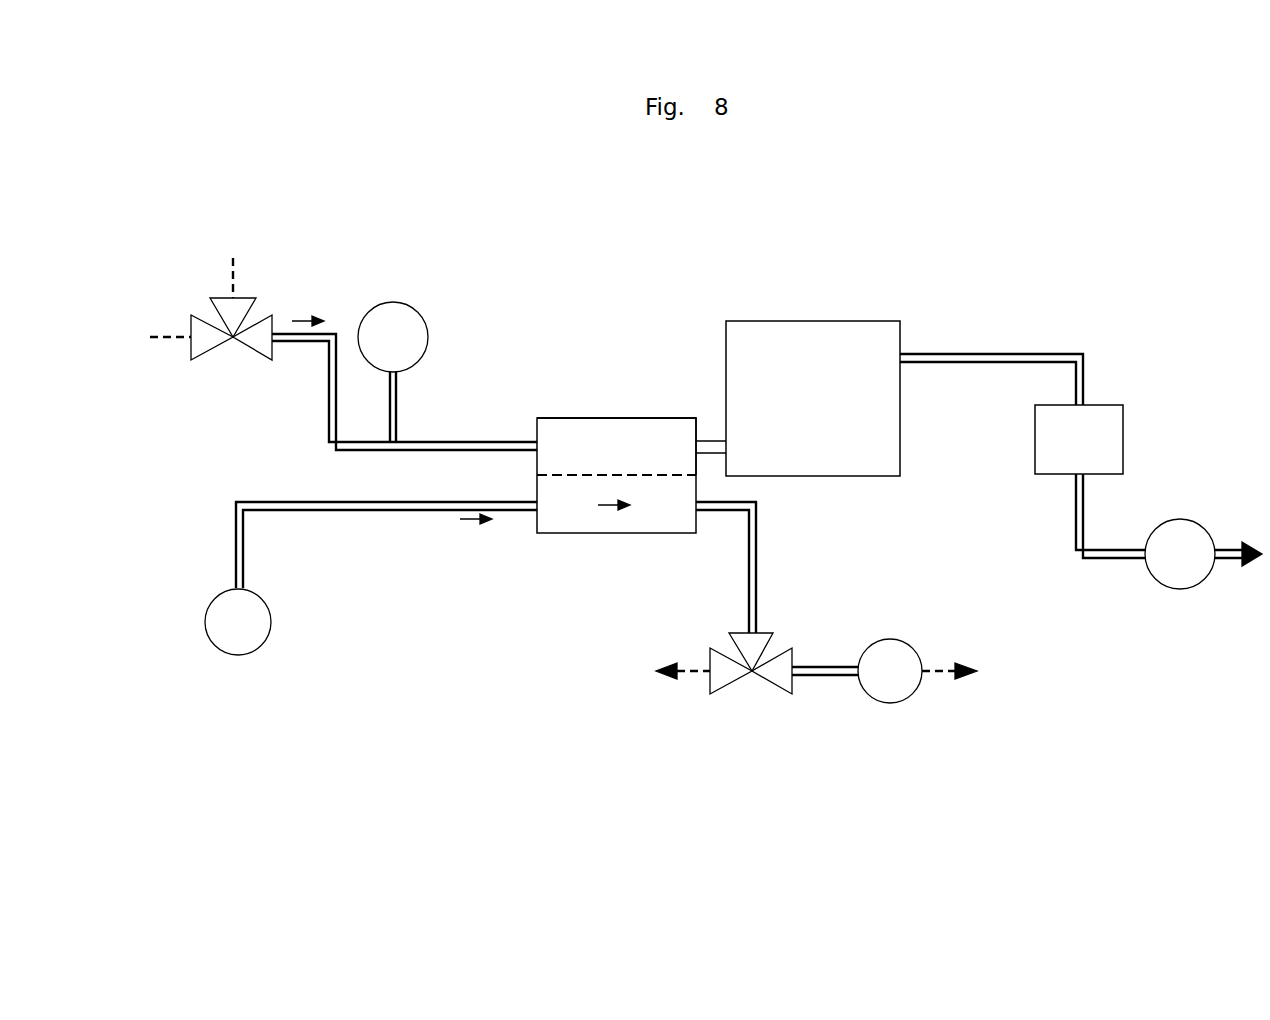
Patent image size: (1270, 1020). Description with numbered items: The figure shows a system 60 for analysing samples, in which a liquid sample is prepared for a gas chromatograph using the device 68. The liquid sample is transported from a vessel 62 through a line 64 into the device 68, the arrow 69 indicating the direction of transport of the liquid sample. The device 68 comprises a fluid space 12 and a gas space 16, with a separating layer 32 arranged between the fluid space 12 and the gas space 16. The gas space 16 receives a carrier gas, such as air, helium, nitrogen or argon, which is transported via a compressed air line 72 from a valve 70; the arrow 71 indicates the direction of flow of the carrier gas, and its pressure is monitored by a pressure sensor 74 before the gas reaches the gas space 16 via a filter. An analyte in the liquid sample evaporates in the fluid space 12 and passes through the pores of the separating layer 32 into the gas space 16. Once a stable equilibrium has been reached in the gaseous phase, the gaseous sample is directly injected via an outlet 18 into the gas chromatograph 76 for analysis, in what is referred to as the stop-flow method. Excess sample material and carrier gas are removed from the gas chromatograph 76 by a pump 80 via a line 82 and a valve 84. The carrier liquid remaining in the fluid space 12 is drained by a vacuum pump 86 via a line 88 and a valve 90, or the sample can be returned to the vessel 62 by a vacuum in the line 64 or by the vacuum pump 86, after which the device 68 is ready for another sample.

The system 60 is at (370, 173).
The valve 70 is at (258, 352).
The arrow 71 is at (300, 320).
The pressure sensor 74 is at (392, 302).
The compressed air line 72 is at (325, 434).
The fluid space 12 is at (556, 533).
The gas space 16 is at (600, 418).
The device 68 is at (633, 408).
The separating layer 32 is at (588, 473).
The arrow 69 is at (460, 520).
The outlet 18 is at (706, 438).
The gas chromatograph 76 is at (796, 321).
The line 82 is at (1085, 372).
The valve 84 is at (1123, 437).
The pump 80 is at (1175, 590).
The line 64 is at (236, 531).
The vessel 62 is at (235, 655).
The line 88 is at (748, 560).
The valve 90 is at (728, 683).
The vacuum pump 86 is at (878, 703).